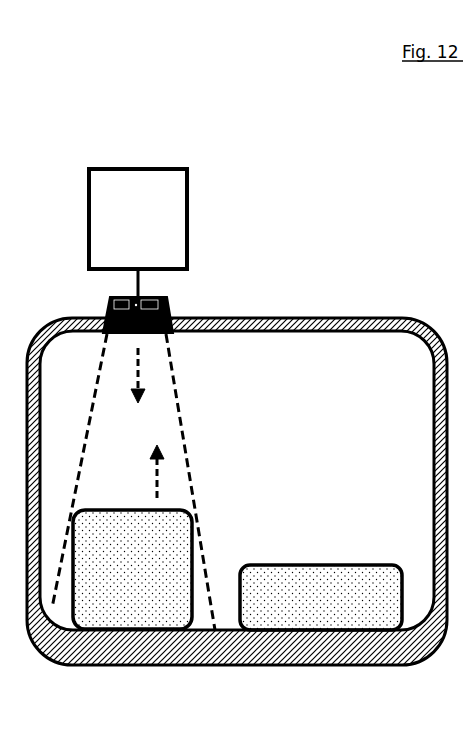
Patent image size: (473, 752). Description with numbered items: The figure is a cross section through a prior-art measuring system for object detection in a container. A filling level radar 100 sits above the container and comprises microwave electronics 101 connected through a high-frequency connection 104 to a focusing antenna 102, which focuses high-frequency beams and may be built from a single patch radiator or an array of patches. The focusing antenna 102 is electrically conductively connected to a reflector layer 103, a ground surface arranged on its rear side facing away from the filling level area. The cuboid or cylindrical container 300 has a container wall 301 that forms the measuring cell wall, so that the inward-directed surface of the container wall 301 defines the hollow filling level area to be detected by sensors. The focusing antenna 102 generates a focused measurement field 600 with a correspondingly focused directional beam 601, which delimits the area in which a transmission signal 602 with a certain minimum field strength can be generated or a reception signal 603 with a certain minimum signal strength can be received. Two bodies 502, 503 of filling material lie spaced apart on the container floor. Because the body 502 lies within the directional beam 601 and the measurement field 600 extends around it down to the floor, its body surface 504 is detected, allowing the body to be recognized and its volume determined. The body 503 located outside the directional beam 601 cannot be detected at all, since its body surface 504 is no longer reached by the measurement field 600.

The filling level radar 100 is at (268, 234).
The microwave electronics 101 is at (193, 178).
The focusing antenna 102 is at (176, 317).
The reflector layer 103 is at (170, 300).
The high-frequency connection 104 is at (122, 296).
The container 300 is at (350, 317).
The container wall 301 is at (432, 421).
The body 502 is at (196, 566).
The body 503 is at (298, 574).
The body surface 504 is at (297, 505).
The measurement field 600 is at (162, 413).
The directional beam 601 is at (189, 439).
The transmission signal 602 is at (144, 376).
The reception signal 603 is at (154, 479).